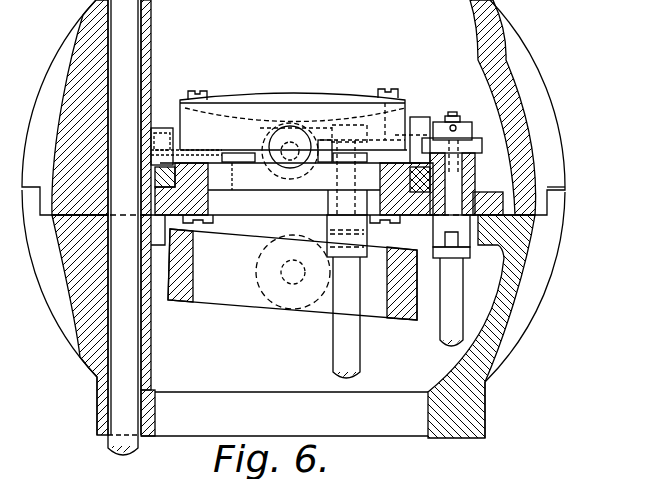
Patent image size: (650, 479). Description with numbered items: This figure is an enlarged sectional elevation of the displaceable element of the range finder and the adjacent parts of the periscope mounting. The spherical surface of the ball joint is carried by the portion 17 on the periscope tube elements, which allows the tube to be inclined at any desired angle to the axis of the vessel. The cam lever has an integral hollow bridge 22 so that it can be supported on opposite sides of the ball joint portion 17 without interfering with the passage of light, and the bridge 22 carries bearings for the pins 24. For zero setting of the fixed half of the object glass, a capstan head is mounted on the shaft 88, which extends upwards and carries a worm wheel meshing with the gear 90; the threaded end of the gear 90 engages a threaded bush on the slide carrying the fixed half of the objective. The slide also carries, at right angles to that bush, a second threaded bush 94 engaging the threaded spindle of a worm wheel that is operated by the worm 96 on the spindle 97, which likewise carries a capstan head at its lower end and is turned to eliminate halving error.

The ball joint portion 17 is at (518, 338).
The hollow bridge 22 is at (222, 295).
The pins 24 is at (296, 280).
The shaft 88 is at (348, 345).
The gear 90 is at (285, 123).
The second threaded bush 94 is at (418, 125).
The worm 96 is at (482, 146).
The spindle 97 is at (455, 295).